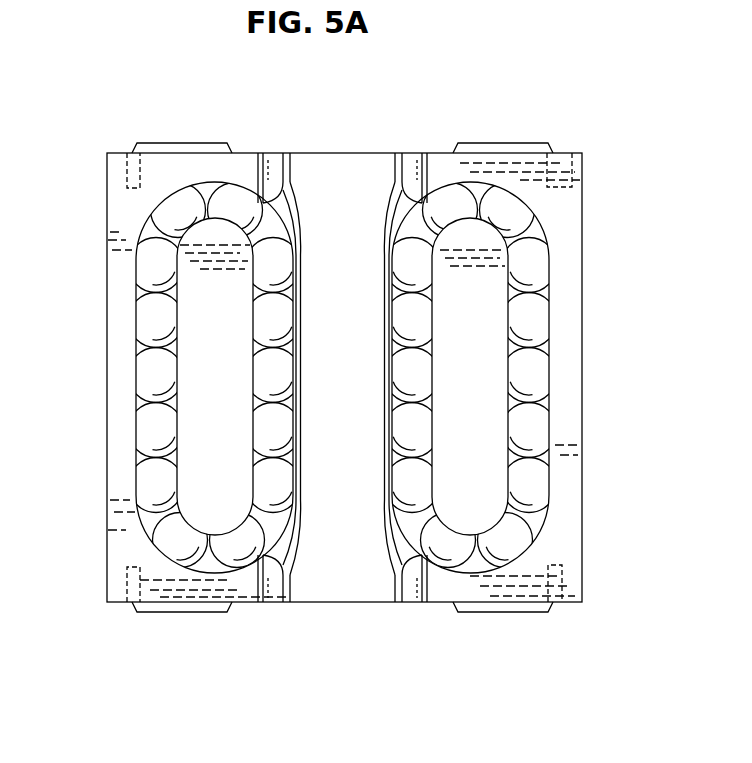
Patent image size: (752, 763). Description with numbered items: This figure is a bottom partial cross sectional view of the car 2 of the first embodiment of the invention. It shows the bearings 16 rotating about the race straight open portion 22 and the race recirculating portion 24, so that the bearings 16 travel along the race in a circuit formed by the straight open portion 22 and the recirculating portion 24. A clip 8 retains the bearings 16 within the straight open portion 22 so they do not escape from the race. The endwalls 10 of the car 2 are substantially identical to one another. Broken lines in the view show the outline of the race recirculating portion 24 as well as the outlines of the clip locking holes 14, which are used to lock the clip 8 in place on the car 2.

The car 2 is at (356, 122).
The clip 8 is at (297, 217).
The endwalls 10 is at (570, 153).
The clip locking holes 14 is at (120, 188).
The bearings 16 is at (178, 205).
The race straight open portion 22 is at (270, 512).
The race recirculating portion 24 is at (550, 390).